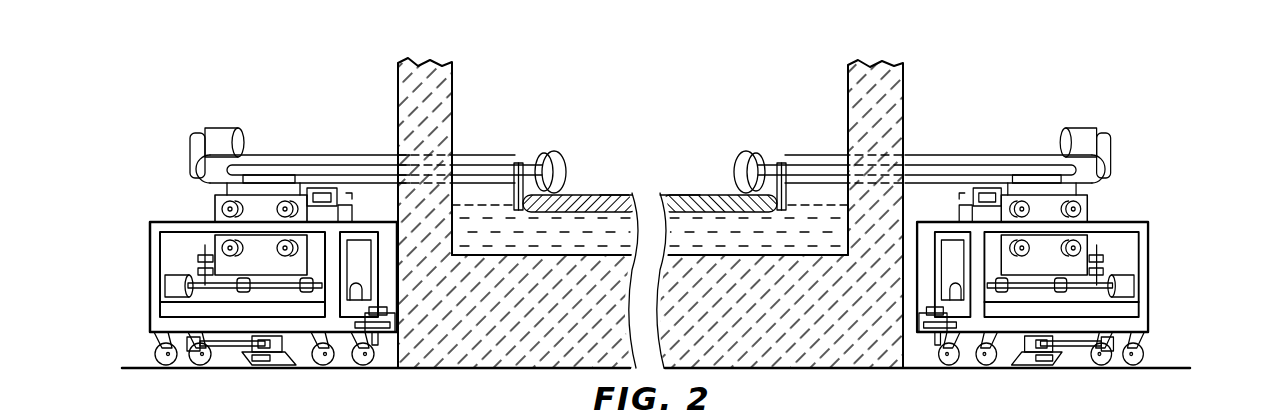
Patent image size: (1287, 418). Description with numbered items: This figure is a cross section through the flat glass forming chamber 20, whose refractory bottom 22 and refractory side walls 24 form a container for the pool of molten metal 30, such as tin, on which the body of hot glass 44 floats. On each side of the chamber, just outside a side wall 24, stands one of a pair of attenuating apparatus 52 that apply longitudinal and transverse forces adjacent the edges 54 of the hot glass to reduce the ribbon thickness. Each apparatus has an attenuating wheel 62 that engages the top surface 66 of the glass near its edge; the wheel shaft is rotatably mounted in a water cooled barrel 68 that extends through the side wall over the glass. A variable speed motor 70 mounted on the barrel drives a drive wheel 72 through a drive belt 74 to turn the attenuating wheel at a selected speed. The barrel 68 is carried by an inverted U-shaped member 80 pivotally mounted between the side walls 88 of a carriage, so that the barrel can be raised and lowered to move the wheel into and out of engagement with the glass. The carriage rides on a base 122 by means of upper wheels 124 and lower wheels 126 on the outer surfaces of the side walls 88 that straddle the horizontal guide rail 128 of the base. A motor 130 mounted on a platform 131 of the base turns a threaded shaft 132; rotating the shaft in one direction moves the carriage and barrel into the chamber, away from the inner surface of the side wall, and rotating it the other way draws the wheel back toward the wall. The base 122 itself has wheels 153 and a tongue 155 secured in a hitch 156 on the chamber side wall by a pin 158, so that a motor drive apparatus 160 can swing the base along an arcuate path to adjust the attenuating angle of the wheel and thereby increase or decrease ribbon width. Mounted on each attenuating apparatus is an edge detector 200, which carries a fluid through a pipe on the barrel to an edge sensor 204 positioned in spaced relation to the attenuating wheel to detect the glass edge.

The flat glass forming chamber 20 is at (938, 67).
The refractory bottom 22 is at (768, 369).
The refractory side walls 24 is at (398, 76).
The pool of molten metal 30 is at (578, 251).
The body of hot glass 44 is at (613, 194).
The attenuating apparatus 52 is at (165, 152).
The edges 54 is at (540, 206).
The attenuating wheel 62 is at (546, 152).
The top surface 66 is at (712, 195).
The water cooled barrel 68 is at (302, 155).
The variable speed motor 70 is at (218, 136).
The drive wheel 72 is at (1108, 170).
The drive belt 74 is at (1110, 153).
The inverted U-shaped member 80 is at (340, 194).
The side walls 88 is at (212, 203).
The base 122 is at (212, 213).
The upper wheels 124 is at (651, 207).
The lower wheels 126 is at (650, 260).
The guide rail 128 is at (178, 228).
The motor 130 is at (172, 288).
The platform 131 is at (175, 309).
The threaded shaft 132 is at (280, 285).
The wheels 153 is at (157, 353).
The tongue 155 is at (392, 326).
The hitch 156 is at (395, 314).
The pin 158 is at (380, 307).
The motor drive apparatus 160 is at (233, 353).
The edge detector 200 is at (370, 162).
The edge sensor 204 is at (512, 196).